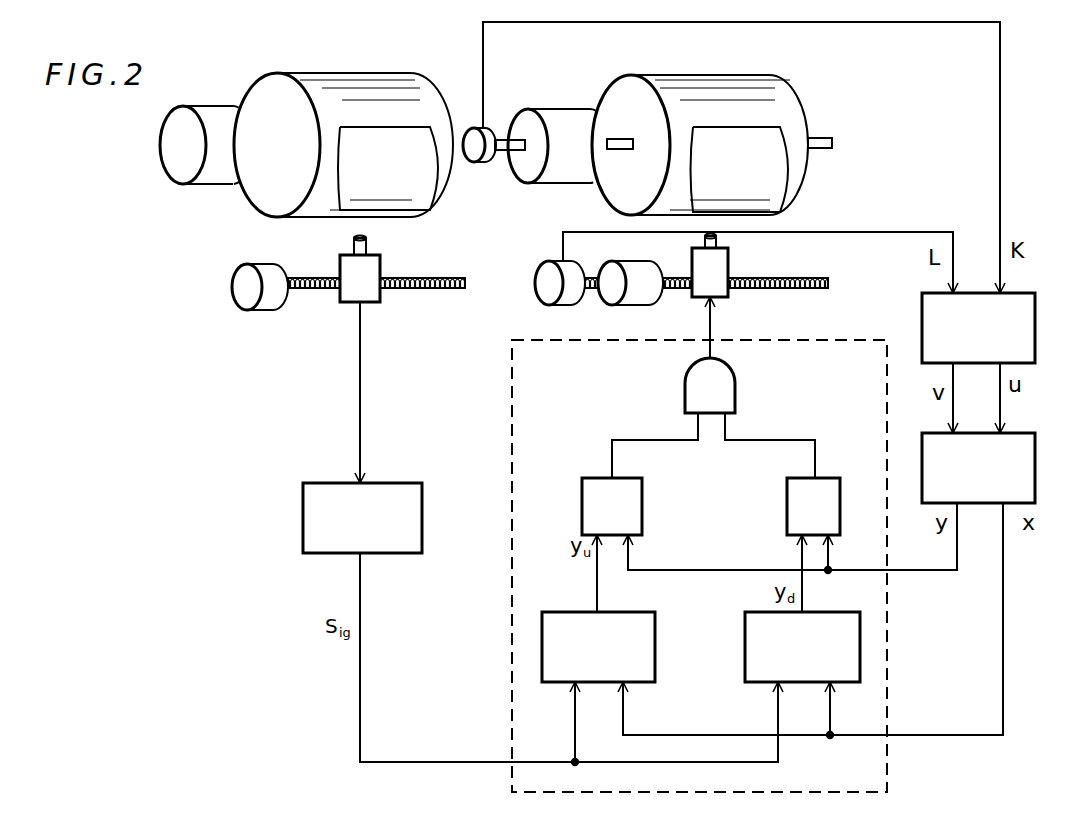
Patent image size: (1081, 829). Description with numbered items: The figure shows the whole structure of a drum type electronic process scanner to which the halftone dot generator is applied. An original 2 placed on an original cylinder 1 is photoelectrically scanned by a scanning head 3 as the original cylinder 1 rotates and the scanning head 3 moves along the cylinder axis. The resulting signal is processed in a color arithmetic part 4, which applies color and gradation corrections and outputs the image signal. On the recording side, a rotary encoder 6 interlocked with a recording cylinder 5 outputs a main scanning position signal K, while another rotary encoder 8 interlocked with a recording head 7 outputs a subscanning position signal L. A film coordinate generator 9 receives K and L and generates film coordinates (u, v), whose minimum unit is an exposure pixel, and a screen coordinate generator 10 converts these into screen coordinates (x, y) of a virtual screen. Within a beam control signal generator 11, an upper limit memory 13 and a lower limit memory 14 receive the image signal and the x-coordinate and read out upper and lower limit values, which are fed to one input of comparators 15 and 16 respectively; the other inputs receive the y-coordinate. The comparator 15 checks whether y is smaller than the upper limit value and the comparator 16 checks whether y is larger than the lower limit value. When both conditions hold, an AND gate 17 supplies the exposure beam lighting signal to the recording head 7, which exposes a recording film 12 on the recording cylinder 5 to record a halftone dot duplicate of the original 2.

The original cylinder 1 is at (297, 74).
The original 2 is at (418, 170).
The scanning head 3 is at (348, 304).
The color arithmetic part 4 is at (402, 483).
The recording cylinder 5 is at (790, 100).
The rotary encoder 6 is at (483, 163).
The recording head 7 is at (723, 260).
The rotary encoder 8 is at (541, 287).
The film coordinate generator 9 is at (1036, 318).
The screen coordinate generator 10 is at (1036, 467).
The beam control signal generator 11 is at (510, 612).
The recording film 12 is at (770, 150).
The upper limit memory 13 is at (672, 620).
The lower limit memory 14 is at (745, 630).
The comparator 15 is at (643, 483).
The comparator 16 is at (785, 483).
The AND gate 17 is at (736, 378).